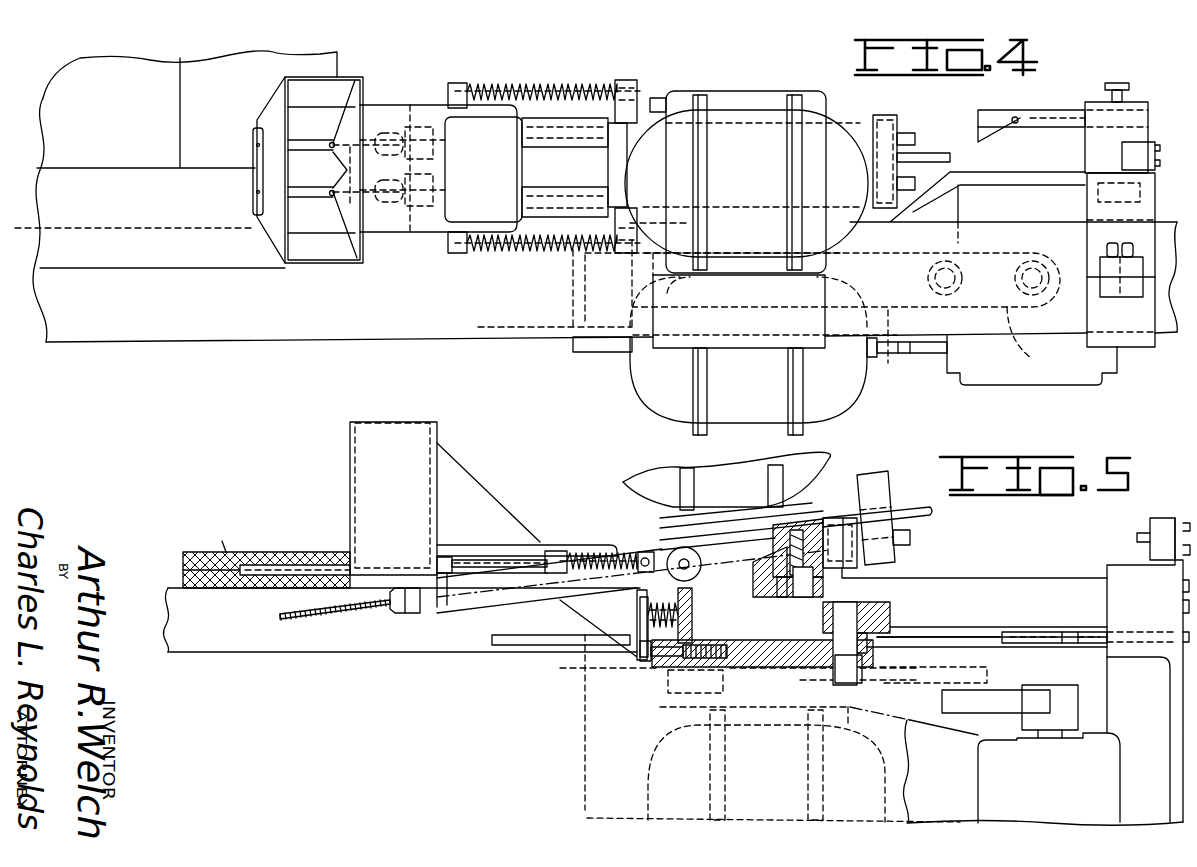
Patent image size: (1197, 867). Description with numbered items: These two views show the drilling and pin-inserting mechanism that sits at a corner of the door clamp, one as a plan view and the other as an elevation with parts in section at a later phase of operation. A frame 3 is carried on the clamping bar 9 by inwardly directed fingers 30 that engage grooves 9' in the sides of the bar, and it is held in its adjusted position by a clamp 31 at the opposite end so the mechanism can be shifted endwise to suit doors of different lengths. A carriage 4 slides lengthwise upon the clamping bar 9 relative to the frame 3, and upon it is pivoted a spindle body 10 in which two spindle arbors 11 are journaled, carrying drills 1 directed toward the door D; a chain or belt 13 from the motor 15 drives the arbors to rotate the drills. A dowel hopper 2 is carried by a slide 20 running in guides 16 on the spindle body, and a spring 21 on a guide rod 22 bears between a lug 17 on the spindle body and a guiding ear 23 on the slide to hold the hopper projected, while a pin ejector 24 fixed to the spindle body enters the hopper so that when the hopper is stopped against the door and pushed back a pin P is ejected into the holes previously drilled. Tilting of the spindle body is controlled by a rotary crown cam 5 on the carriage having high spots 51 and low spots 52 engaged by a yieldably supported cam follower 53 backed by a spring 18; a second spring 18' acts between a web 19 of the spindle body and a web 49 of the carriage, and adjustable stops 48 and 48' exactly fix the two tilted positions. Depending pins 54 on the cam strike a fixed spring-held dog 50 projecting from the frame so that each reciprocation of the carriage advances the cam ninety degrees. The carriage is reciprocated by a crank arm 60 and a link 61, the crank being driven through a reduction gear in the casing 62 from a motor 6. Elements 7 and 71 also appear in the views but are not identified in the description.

In FIG. 5, the drills 1 is at (323, 618).
In FIG. 4, the dowel hopper 2 is at (318, 250).
In FIG. 5, the dowel hopper 2 is at (445, 498).
In FIG. 5, the frame 3 is at (568, 747).
In FIG. 4, the carriage 4 is at (822, 294).
In FIG. 5, the carriage 4 is at (765, 668).
In FIG. 5, the rotary crown cam 5 is at (893, 625).
In FIG. 4, the motor 6 is at (748, 356).
In FIG. 5, the motor 6 is at (912, 782).
In FIG. 4, the stop bracket 7 is at (1122, 152).
In FIG. 5, the stop bracket 7 is at (1137, 536).
In FIG. 4, the clamping bar 9 is at (596, 209).
In FIG. 5, the clamping bar 9 is at (401, 640).
In FIG. 4, the grooves 9' is at (529, 350).
In FIG. 5, the grooves 9' is at (726, 728).
In FIG. 4, the spindle body 10 is at (608, 165).
In FIG. 5, the spindle body 10 is at (515, 604).
In FIG. 4, the spindle arbors 11 is at (416, 105).
In FIG. 5, the spindle arbors 11 is at (418, 613).
In FIG. 4, the chain or belt 13 is at (873, 186).
In FIG. 5, the chain or belt 13 is at (878, 478).
In FIG. 4, the motor 15 is at (746, 182).
In FIG. 5, the motor 15 is at (727, 481).
In FIG. 4, the guides 16 is at (577, 112).
In FIG. 5, the guides 16 is at (462, 573).
In FIG. 4, the lug 17 is at (637, 92).
In FIG. 5, the lug 17 is at (644, 552).
In FIG. 5, the spring 18 is at (812, 528).
In FIG. 5, the spring 18' is at (623, 627).
In FIG. 5, the web 19 is at (637, 657).
In FIG. 5, the slide 20 is at (584, 553).
In FIG. 4, the spring 21 is at (603, 84).
In FIG. 5, the spring 21 is at (601, 553).
In FIG. 4, the guide rod 22 is at (530, 78).
In FIG. 5, the guide rod 22 is at (480, 550).
In FIG. 4, the guiding ear 23 is at (458, 253).
In FIG. 5, the guiding ear 23 is at (552, 551).
In FIG. 4, the pin ejector 24 is at (347, 196).
In FIG. 5, the pin ejector 24 is at (396, 568).
In FIG. 4, the inwardly directed fingers 30 is at (595, 352).
In FIG. 4, the clamp 31 is at (1134, 298).
In FIG. 5, the adjustable stop 48 is at (698, 633).
In FIG. 5, the adjustable stop 48' is at (632, 701).
In FIG. 5, the web 49 is at (690, 605).
In FIG. 4, the dog 50 is at (988, 138).
In FIG. 5, the dog 50 is at (1015, 636).
In FIG. 5, the high spots 51 is at (888, 602).
In FIG. 5, the low spots 52 is at (857, 600).
In FIG. 5, the cam follower 53 is at (765, 582).
In FIG. 5, the depending pins 54 is at (866, 655).
In FIG. 4, the crank arm 60 is at (1038, 339).
In FIG. 5, the crank arm 60 is at (995, 713).
In FIG. 4, the link 61 is at (888, 362).
In FIG. 5, the link 61 is at (940, 663).
In FIG. 4, the casing 62 is at (1003, 378).
In FIG. 5, the casing 62 is at (1049, 778).
In FIG. 4, the rod 71 is at (948, 162).
In FIG. 5, the rod 71 is at (950, 512).
In FIG. 4, the door D is at (89, 190).
In FIG. 5, the door D is at (266, 552).
In FIG. 5, the pins P is at (318, 557).